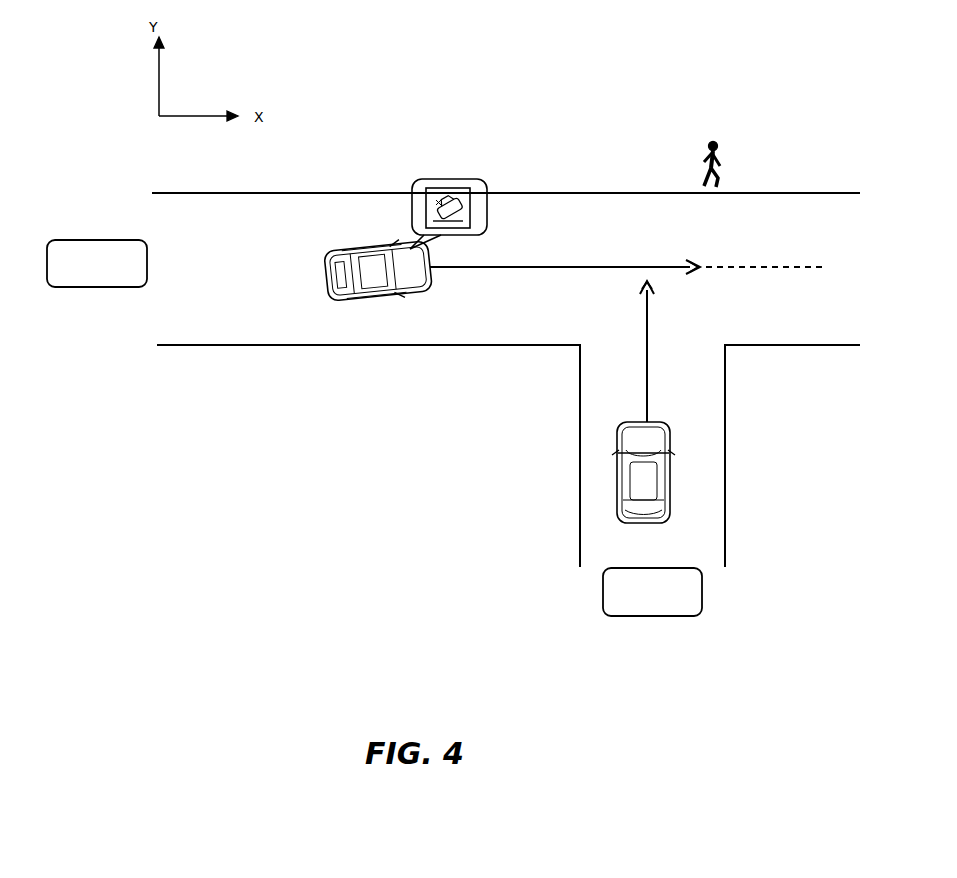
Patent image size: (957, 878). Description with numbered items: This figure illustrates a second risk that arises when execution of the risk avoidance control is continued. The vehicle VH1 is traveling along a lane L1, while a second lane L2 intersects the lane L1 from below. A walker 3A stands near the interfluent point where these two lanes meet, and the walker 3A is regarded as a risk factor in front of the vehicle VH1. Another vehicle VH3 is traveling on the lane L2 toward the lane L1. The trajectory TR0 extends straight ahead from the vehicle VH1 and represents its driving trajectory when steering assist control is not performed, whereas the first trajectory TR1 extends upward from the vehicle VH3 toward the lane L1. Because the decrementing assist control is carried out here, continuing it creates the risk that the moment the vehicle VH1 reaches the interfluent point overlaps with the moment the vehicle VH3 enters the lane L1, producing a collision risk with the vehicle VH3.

The vehicle VH1 is at (373, 247).
The vehicle VH3 is at (668, 478).
The walker 3A is at (717, 148).
The trajectory TR0 is at (649, 267).
The first trajectory TR1 is at (666, 351).
The lane L1 is at (97, 263).
The lane L2 is at (652, 592).